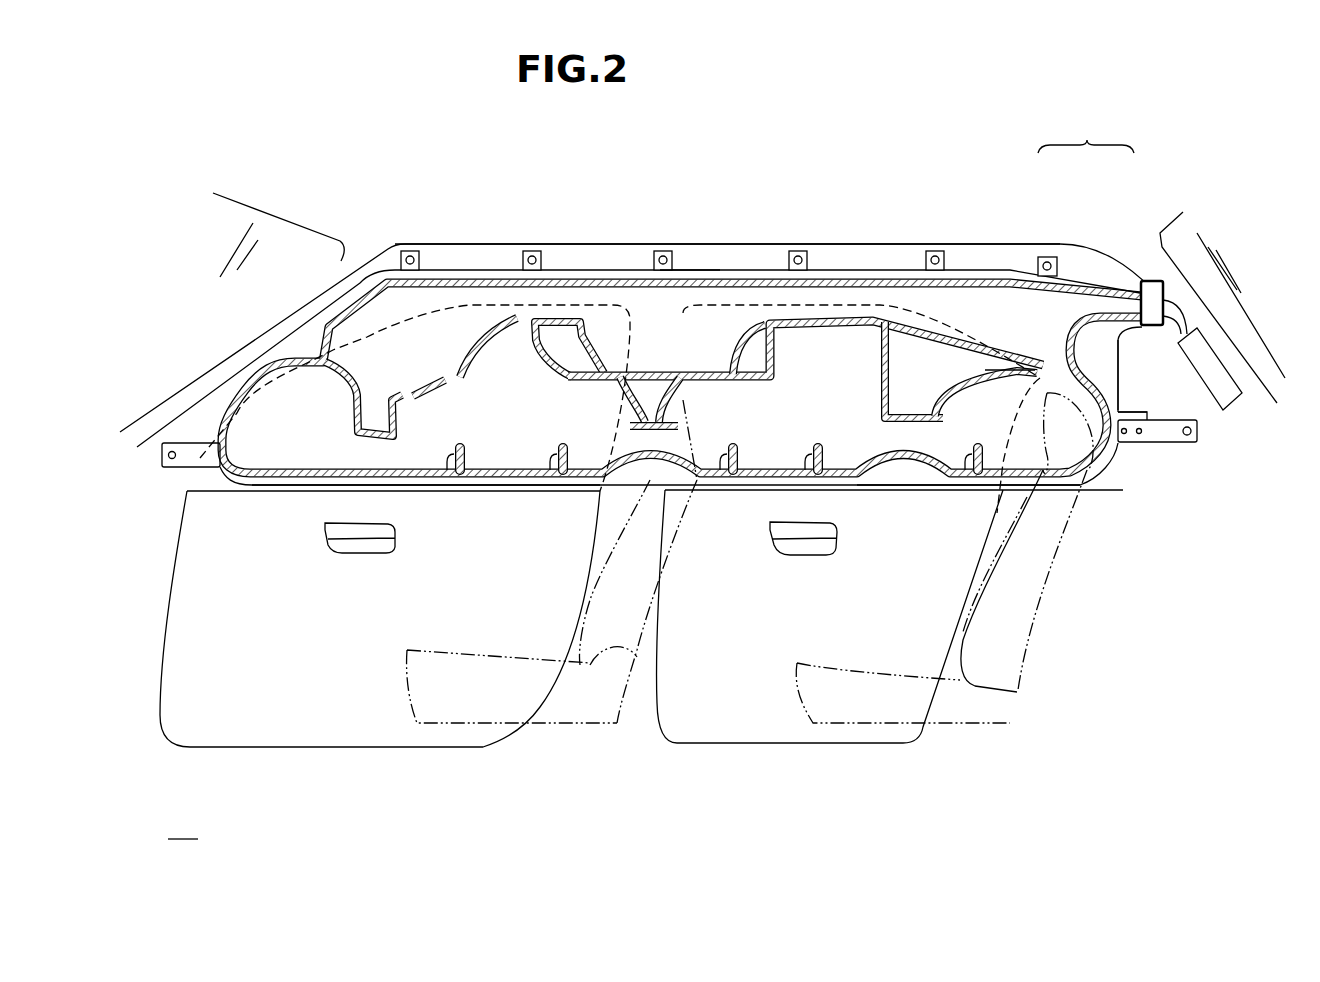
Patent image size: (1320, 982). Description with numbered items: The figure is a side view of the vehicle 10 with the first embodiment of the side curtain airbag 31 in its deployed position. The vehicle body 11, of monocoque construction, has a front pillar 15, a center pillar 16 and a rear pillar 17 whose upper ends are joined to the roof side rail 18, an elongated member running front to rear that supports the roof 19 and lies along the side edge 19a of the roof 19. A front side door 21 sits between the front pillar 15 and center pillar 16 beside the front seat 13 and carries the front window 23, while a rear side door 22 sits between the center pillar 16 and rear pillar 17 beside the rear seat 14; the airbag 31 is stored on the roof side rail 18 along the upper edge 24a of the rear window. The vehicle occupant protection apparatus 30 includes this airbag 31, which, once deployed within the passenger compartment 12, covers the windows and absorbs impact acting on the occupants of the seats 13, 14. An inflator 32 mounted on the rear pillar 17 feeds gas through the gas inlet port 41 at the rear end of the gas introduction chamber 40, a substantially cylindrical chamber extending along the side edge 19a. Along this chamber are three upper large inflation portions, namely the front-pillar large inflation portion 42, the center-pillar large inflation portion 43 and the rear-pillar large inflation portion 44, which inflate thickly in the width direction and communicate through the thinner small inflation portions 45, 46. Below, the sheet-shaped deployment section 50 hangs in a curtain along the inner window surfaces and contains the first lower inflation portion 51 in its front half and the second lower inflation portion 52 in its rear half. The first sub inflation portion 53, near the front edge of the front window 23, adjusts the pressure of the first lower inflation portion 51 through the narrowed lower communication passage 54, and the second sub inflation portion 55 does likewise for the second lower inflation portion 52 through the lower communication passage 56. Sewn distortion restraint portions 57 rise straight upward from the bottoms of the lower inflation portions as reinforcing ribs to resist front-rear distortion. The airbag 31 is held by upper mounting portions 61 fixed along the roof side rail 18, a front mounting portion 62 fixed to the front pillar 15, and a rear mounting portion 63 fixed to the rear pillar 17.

The vehicle 10 is at (152, 155).
The vehicle body 11 is at (140, 412).
The passenger compartment 12 is at (182, 827).
The front seat 13 is at (548, 726).
The rear seat 14 is at (858, 727).
The front pillar 15 is at (192, 387).
The center pillar 16 is at (595, 549).
The rear pillar 17 is at (1240, 430).
The roof side rail 18 is at (603, 252).
The roof 19 is at (645, 212).
The side edge of the roof 19a is at (687, 250).
The front side door 21 is at (323, 735).
The rear side door 22 is at (744, 735).
The front window 23 is at (385, 340).
The upper edge of the rear window 24a is at (756, 312).
The vehicle occupant protection apparatus 30 is at (1183, 280).
The side curtain airbag 31 is at (1086, 133).
The inflator 32 is at (1212, 353).
The gas introduction chamber 40 is at (1105, 303).
The gas inlet port 41 is at (1148, 282).
The front-pillar large inflation portion 42 is at (455, 333).
The center-pillar large inflation portion 43 is at (717, 327).
The rear-pillar large inflation portion 44 is at (990, 310).
The small inflation portion 45 is at (562, 290).
The small inflation portion 46 is at (843, 278).
The deployment section 50 is at (1095, 358).
The first lower inflation portion 51 is at (517, 433).
The second lower inflation portion 52 is at (972, 415).
The first sub inflation portion 53 is at (290, 440).
The lower communication passage 54 is at (370, 448).
The second sub inflation portion 55 is at (810, 402).
The lower communication passage 56 is at (907, 437).
The distortion restraint portions 57 is at (455, 450).
The upper mounting portions 61 is at (932, 250).
The front mounting portion 62 is at (182, 468).
The rear mounting portion 63 is at (1170, 440).